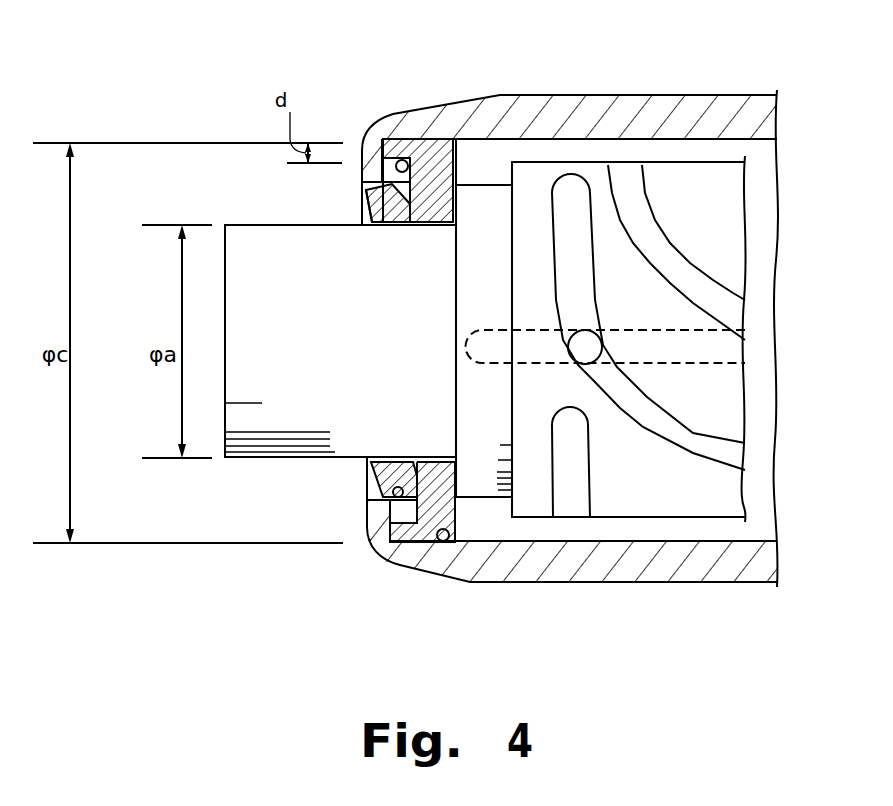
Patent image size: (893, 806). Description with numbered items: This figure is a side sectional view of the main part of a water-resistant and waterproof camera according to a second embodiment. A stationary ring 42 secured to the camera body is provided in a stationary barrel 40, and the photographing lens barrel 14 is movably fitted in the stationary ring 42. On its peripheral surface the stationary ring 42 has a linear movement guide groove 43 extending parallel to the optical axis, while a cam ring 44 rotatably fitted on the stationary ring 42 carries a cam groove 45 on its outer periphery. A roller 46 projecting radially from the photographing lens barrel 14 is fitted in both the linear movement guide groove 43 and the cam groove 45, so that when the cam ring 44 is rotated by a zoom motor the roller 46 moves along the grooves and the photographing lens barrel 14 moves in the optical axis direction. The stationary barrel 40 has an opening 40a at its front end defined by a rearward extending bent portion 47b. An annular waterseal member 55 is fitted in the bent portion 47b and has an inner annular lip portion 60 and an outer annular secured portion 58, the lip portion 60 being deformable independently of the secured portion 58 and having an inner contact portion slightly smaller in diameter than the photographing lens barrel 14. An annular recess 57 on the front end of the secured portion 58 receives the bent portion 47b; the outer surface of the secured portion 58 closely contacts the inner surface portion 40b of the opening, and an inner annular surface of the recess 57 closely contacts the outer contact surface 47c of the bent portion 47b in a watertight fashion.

The photographing lens barrel 14 is at (267, 233).
The stationary barrel 40 is at (663, 107).
The opening 40a is at (362, 203).
The inner surface portion of the opening 40b is at (453, 537).
The stationary ring 42 is at (489, 202).
The linear movement guide groove 43 is at (700, 363).
The cam ring 44 is at (722, 200).
The cam groove 45 is at (722, 467).
The roller 46 is at (585, 362).
The bent portion 47b is at (410, 543).
The outer contact surface 47c is at (418, 225).
The annular waterseal member 55 is at (427, 163).
The annular recess 57 is at (395, 190).
The secured portion 58 is at (455, 521).
The lip portion 60 is at (395, 225).